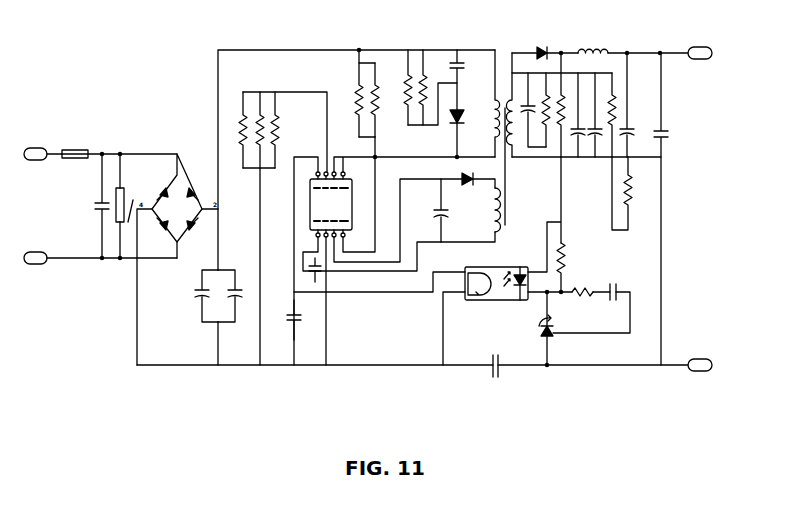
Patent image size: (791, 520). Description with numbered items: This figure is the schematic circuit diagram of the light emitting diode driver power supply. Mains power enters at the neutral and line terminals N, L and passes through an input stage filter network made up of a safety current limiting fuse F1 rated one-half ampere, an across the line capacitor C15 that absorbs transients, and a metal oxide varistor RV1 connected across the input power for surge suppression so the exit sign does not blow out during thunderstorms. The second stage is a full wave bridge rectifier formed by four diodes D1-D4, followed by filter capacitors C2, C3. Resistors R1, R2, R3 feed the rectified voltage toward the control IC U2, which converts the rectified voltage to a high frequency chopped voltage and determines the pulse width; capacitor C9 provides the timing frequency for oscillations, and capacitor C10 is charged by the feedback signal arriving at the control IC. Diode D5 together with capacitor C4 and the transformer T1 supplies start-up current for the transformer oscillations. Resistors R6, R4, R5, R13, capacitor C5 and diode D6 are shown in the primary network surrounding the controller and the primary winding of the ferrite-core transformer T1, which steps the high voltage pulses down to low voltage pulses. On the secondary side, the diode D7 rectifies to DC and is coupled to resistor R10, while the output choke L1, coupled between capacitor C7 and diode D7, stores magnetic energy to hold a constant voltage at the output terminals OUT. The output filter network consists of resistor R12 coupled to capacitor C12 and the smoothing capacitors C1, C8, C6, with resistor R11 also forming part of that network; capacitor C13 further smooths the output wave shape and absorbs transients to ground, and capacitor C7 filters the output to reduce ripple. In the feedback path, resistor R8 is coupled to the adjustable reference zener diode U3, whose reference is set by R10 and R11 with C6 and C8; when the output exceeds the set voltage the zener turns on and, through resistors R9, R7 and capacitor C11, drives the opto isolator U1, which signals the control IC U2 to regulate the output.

The neutral input terminal N is at (43, 154).
The line input terminal L is at (100, 258).
The safety current limiting fuse F1 is at (119, 149).
The across the line capacitor C15 is at (96, 206).
The metal oxide varistor RV1 is at (128, 206).
The full wave bridge rectifier diodes D1-D4 is at (177, 259).
The electrolytic capacitor C2 is at (208, 296).
The electrolytic capacitor C3 is at (236, 296).
The resistor R1 is at (246, 130).
The resistor R2 is at (263, 130).
The resistor R3 is at (278, 130).
The control IC U2 is at (339, 204).
The timing capacitor C9 is at (315, 266).
The capacitor C10 is at (301, 320).
The capacitor C4 is at (447, 210).
The diode D5 is at (465, 186).
The resistor R6 is at (362, 100).
The resistor R4 is at (378, 100).
The resistor R5 is at (411, 87).
The resistor R13 is at (428, 87).
The capacitor C5 is at (455, 61).
The diode D6 is at (463, 132).
The transformer T1 is at (503, 141).
The diode D7 is at (541, 48).
The output choke L1 is at (593, 46).
The output terminals OUT is at (700, 209).
The capacitor C12 is at (531, 110).
The resistor R12 is at (550, 110).
The resistor R8 is at (564, 105).
The electrolytic capacitor C1 is at (583, 115).
The capacitor C8 is at (600, 115).
The resistor R11 is at (617, 115).
The capacitor C6 is at (632, 105).
The capacitor C13 is at (664, 128).
The resistor R10 is at (627, 193).
The resistor R9 is at (566, 267).
The resistor R7 is at (582, 288).
The capacitor C11 is at (609, 278).
The opto isolator U1 is at (496, 267).
The adjustable reference zener diode U3 is at (554, 328).
The capacitor C7 is at (502, 352).